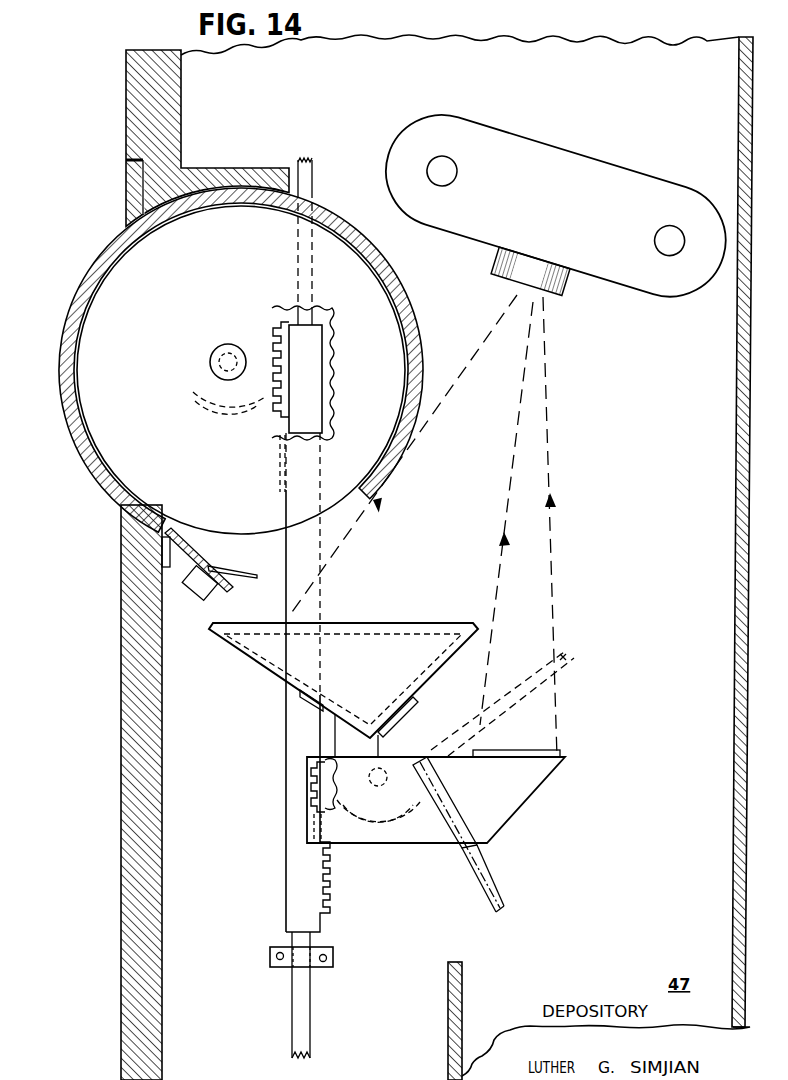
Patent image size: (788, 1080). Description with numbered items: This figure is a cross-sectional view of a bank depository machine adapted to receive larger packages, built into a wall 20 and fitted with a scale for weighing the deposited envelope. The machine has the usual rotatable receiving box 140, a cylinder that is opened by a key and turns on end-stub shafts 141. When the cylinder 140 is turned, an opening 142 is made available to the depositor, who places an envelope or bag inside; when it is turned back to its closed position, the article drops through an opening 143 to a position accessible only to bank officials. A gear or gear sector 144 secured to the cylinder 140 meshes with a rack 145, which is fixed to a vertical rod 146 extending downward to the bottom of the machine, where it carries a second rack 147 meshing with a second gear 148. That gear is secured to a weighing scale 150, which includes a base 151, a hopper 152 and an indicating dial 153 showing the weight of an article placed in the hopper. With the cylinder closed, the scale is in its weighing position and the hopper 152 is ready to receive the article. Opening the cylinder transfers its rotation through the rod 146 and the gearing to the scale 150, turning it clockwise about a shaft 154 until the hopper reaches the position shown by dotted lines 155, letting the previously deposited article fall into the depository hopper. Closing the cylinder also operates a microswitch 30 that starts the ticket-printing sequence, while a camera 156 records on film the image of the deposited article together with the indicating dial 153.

The housing wall 20 is at (126, 139).
The microswitch 30 is at (212, 568).
The rotatable receiving box 140 is at (62, 387).
The end-stub shafts 141 is at (211, 358).
The opening 142 is at (310, 224).
The opening 143 is at (224, 530).
The gear sector 144 is at (283, 320).
The rack 145 is at (281, 437).
The vertical rod 146 is at (318, 398).
The second rack 147 is at (331, 862).
The second gear 148 is at (345, 794).
The weighing scale 150 is at (606, 787).
The base 151 is at (508, 808).
The hopper 152 is at (360, 624).
The indicating dial 153 is at (546, 750).
The shaft 154 is at (380, 767).
The dotted lines 155 is at (567, 657).
The camera 156 is at (613, 170).